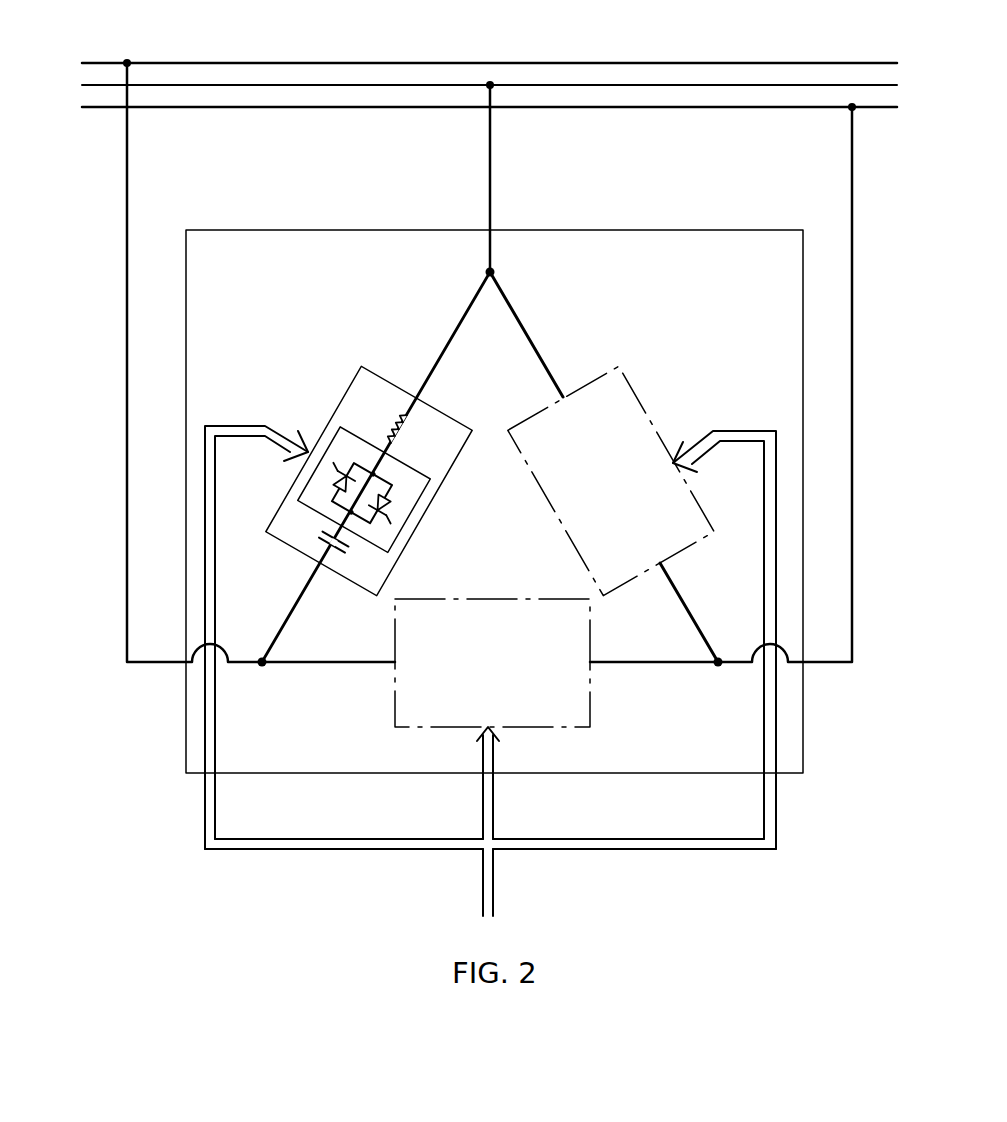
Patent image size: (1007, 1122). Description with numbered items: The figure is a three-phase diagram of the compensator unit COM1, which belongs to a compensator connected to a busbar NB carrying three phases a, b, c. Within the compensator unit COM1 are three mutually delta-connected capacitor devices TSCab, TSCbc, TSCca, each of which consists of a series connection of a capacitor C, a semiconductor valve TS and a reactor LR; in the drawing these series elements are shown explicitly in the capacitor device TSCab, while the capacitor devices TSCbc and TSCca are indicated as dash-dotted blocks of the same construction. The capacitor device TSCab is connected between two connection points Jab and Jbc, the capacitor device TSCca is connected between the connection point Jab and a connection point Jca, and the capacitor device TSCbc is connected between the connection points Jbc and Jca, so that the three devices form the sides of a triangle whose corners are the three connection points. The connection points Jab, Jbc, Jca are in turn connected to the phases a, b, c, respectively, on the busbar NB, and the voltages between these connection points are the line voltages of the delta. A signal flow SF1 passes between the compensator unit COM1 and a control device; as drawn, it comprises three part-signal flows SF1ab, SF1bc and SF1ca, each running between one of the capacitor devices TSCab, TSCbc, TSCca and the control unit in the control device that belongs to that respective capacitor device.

The busbar NB is at (490, 46).
The phase a is at (479, 63).
The phase b is at (479, 85).
The phase c is at (479, 107).
The compensator unit COM1 is at (567, 230).
The connection point Jbc is at (493, 271).
The connection point Jab is at (264, 664).
The connection point Jca is at (716, 664).
The capacitor device TSCab is at (371, 467).
The capacitor device TSCbc is at (628, 381).
The capacitor device TSCca is at (568, 727).
The reactor LR is at (398, 429).
The semiconductor valve TS is at (364, 490).
The capacitor C is at (334, 542).
The part-signal flow SF1ab is at (344, 637).
The part-signal flow SF1bc is at (667, 640).
The part-signal flow SF1ca is at (517, 783).
The signal flow SF1 is at (509, 882).